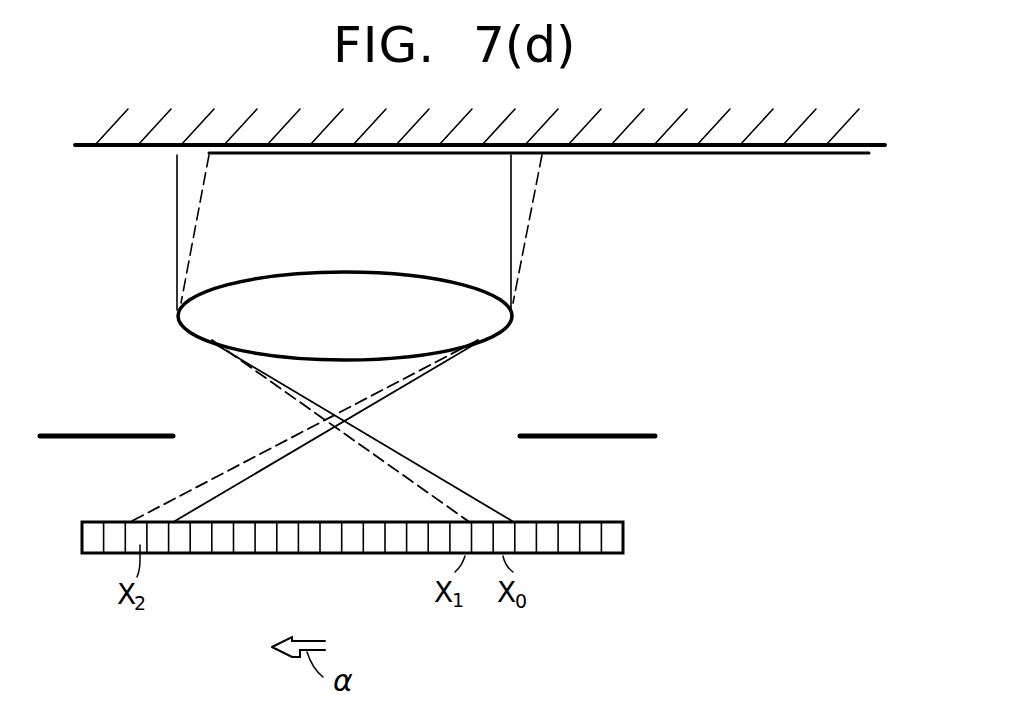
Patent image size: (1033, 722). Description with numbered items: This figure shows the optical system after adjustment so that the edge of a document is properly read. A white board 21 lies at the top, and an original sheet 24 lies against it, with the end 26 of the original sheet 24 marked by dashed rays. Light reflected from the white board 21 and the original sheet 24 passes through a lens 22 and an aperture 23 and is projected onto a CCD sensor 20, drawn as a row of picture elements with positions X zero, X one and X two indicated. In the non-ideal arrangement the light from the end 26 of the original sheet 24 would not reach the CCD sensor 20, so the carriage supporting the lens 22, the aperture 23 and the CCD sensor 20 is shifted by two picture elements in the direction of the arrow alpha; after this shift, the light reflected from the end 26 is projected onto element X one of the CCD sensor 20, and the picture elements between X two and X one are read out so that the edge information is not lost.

The CCD sensor 20 is at (623, 538).
The white board 21 is at (128, 133).
The lens 22 is at (492, 319).
The aperture 23 is at (573, 433).
The original sheet 24 is at (373, 155).
The end of the original sheet 26 is at (212, 155).